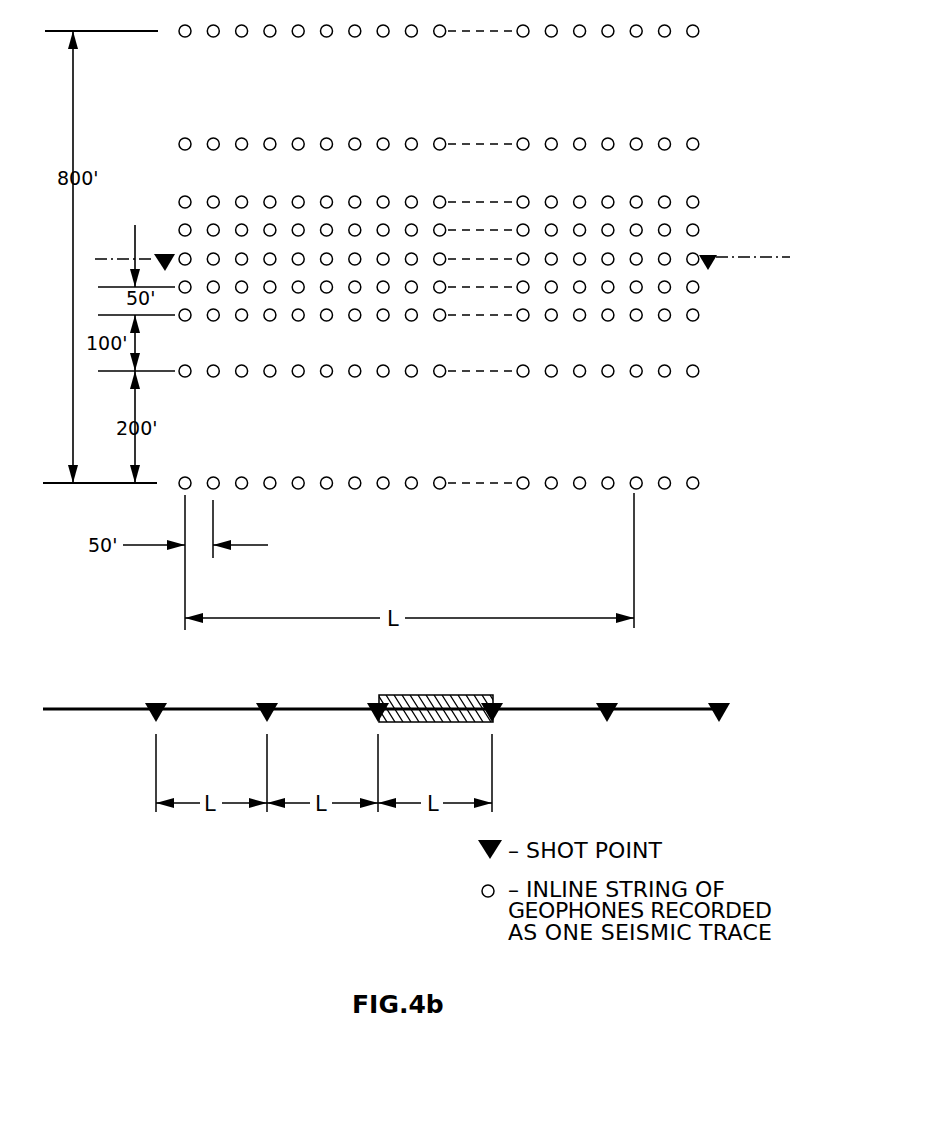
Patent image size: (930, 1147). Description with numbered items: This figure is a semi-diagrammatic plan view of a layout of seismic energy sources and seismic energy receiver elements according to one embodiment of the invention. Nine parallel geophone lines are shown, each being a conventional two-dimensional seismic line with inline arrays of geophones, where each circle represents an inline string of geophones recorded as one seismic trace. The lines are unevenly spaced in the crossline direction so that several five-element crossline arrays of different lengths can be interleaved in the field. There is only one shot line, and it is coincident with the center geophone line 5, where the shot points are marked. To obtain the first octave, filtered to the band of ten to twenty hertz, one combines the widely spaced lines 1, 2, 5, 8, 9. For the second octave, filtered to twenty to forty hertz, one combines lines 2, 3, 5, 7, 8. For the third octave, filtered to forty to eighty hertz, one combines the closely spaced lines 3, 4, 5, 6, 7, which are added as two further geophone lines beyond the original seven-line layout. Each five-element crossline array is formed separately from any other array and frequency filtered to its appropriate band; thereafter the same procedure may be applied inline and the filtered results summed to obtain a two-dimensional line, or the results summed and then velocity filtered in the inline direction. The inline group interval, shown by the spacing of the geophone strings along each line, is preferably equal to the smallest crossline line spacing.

The geophone line 1 is at (478, 24).
The geophone line 2 is at (475, 137).
The geophone line 3 is at (476, 194).
The geophone line 4 is at (476, 223).
The geophone line 5 is at (476, 248).
The geophone line 6 is at (477, 281).
The geophone line 7 is at (476, 308).
The geophone line 8 is at (477, 365).
The geophone line 9 is at (478, 478).